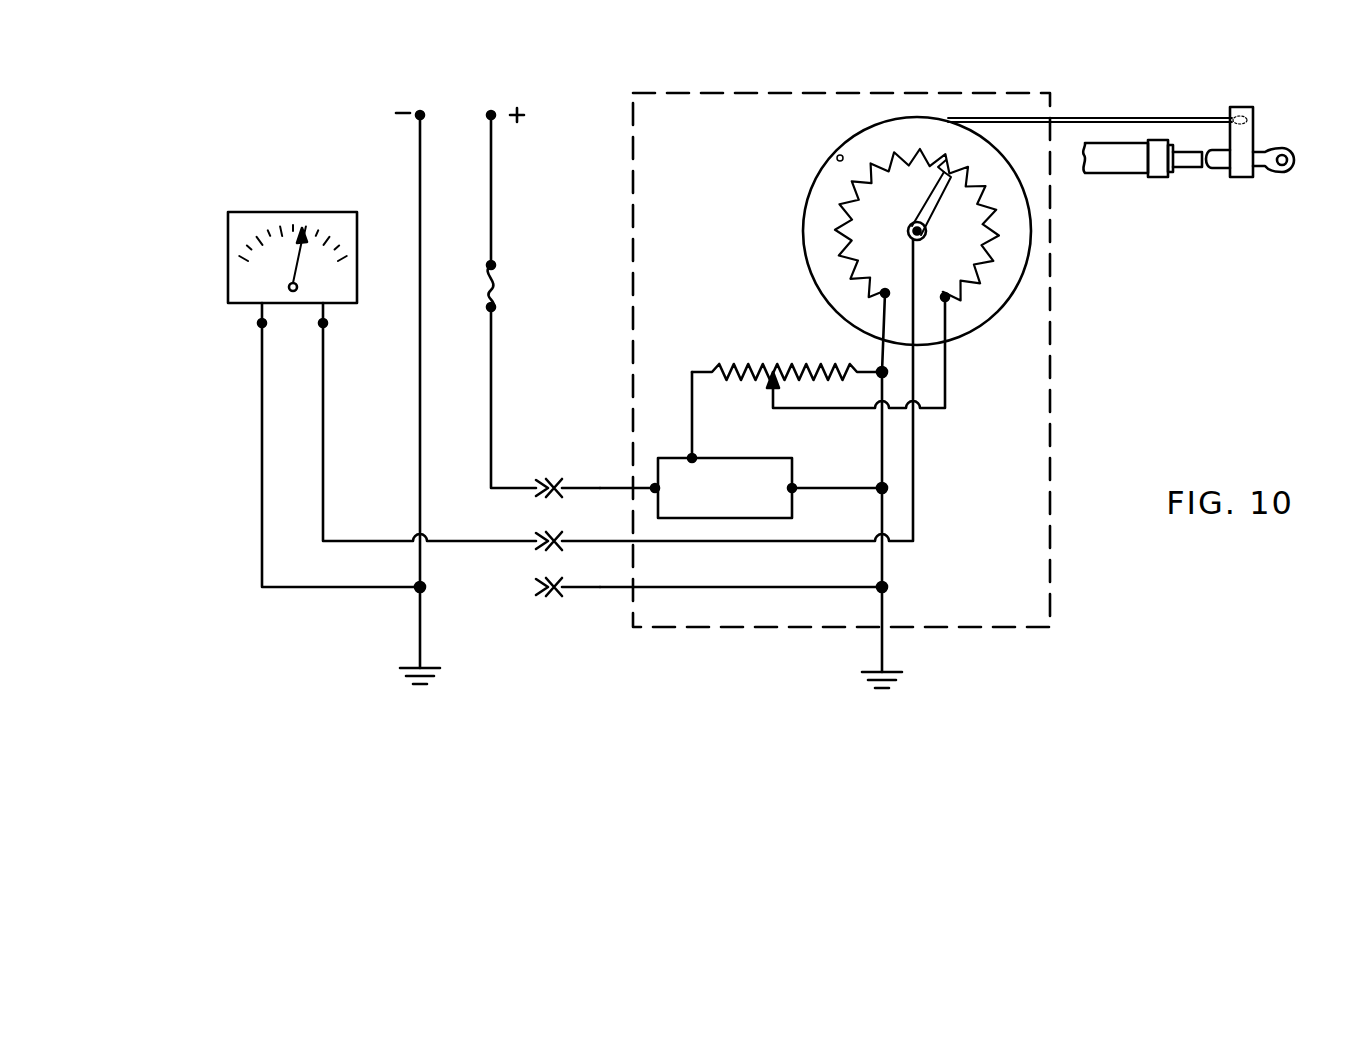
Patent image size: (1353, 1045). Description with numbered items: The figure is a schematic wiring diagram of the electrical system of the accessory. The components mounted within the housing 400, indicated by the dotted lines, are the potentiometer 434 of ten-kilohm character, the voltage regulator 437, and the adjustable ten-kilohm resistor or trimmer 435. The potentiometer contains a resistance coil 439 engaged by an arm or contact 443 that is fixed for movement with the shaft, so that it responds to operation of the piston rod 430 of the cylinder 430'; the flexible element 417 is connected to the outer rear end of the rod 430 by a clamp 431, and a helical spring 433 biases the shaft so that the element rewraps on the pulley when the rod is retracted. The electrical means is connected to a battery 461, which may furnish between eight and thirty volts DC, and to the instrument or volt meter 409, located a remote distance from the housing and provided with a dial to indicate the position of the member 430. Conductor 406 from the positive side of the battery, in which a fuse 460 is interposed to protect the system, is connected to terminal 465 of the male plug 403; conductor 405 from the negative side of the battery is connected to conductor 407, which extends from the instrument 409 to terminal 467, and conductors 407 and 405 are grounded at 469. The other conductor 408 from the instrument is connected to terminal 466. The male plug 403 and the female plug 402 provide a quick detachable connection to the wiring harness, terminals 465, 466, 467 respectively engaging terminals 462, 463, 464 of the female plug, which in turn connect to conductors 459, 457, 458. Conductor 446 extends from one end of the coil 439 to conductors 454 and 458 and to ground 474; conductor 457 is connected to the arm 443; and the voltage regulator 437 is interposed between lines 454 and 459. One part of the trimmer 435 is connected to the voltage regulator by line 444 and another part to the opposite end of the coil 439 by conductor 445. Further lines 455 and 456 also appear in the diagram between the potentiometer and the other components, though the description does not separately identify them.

The housing 400 is at (1056, 592).
The female plug 402 is at (558, 478).
The male plug 403 is at (540, 590).
The conductor 405 is at (420, 158).
The conductor 406 is at (493, 157).
The conductor 407 is at (260, 470).
The conductor 408 is at (324, 430).
The instrument 409 is at (228, 272).
The flexible element 417 is at (1158, 118).
The piston rod 430 is at (1218, 204).
The cylinder 430' is at (1142, 184).
The clamp 431 is at (1243, 178).
The helical spring 433 is at (1002, 285).
The potentiometer 434 is at (808, 192).
The adjustable resistor 435 is at (757, 365).
The voltage regulator 437 is at (757, 464).
The resistance coil 439 is at (846, 220).
The arm 443 is at (944, 172).
The conductor 444 is at (690, 400).
The conductor 445 is at (948, 390).
The conductor 446 is at (887, 452).
The conductor 454 is at (841, 491).
The lead 455 is at (916, 520).
The lead 456 is at (880, 364).
The conductor 457 is at (748, 544).
The conductor 458 is at (750, 592).
The conductor 459 is at (602, 485).
The fuse 460 is at (498, 285).
The battery 461 is at (470, 72).
The terminal 462 is at (555, 490).
The terminal 463 is at (550, 543).
The terminal 464 is at (555, 595).
The terminal 465 is at (540, 480).
The terminal 466 is at (540, 538).
The terminal 467 is at (540, 585).
The ground 469 is at (405, 678).
The ground 474 is at (888, 690).